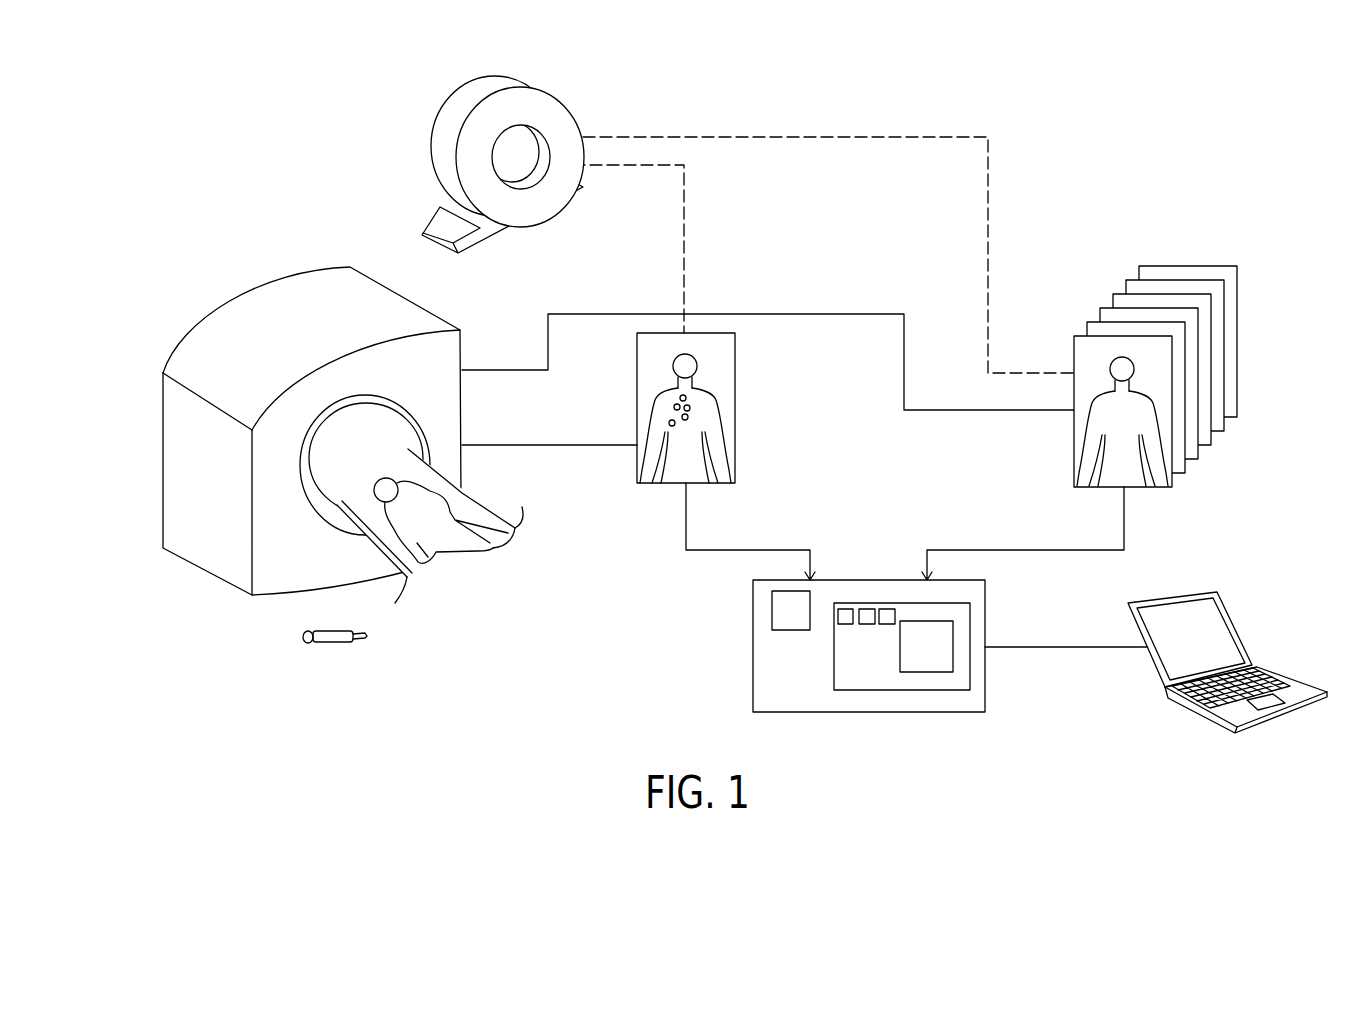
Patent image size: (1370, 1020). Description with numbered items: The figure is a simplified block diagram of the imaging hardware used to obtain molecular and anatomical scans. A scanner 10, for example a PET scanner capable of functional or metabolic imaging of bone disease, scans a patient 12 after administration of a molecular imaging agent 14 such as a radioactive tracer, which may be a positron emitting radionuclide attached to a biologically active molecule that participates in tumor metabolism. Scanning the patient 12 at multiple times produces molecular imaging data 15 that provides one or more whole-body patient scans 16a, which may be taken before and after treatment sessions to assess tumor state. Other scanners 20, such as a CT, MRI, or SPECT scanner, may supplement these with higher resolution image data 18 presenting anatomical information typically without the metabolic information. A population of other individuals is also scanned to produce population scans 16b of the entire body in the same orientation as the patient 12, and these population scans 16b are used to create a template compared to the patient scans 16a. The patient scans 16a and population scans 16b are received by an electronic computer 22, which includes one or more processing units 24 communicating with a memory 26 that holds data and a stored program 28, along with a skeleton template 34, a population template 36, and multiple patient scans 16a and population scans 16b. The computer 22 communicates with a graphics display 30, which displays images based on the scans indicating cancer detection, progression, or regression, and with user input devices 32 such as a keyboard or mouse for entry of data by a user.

The scanner 10 is at (197, 583).
The patient 12 is at (467, 493).
The molecular imaging agent 14 is at (330, 643).
The molecular imaging data 15 is at (505, 370).
The patient scans 16a is at (737, 408).
The population scans 16b is at (1237, 400).
The higher resolution image data 18 is at (730, 137).
The other scanners 20 is at (452, 113).
The electronic computer 22 is at (753, 675).
The processing units 24 is at (787, 612).
The memory 26 is at (870, 680).
The stored program 28 is at (935, 655).
The graphics display 30 is at (1233, 630).
The user input devices 32 is at (1293, 683).
The skeleton template 34 is at (843, 608).
The population template 36 is at (867, 608).